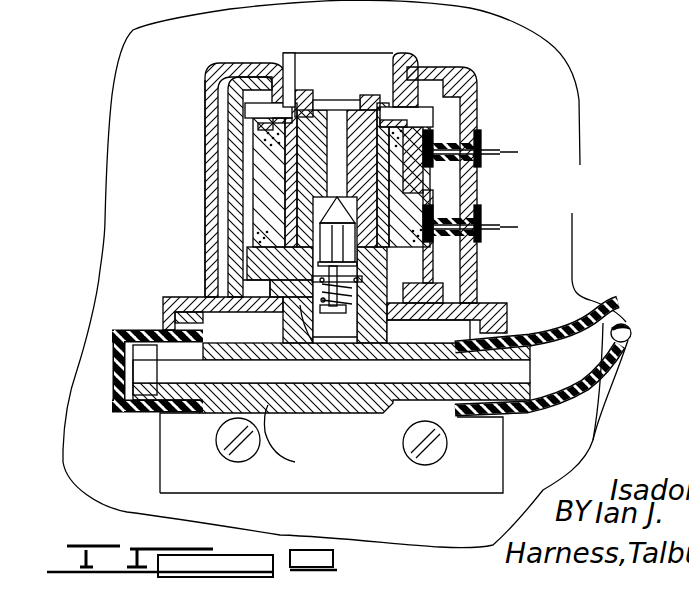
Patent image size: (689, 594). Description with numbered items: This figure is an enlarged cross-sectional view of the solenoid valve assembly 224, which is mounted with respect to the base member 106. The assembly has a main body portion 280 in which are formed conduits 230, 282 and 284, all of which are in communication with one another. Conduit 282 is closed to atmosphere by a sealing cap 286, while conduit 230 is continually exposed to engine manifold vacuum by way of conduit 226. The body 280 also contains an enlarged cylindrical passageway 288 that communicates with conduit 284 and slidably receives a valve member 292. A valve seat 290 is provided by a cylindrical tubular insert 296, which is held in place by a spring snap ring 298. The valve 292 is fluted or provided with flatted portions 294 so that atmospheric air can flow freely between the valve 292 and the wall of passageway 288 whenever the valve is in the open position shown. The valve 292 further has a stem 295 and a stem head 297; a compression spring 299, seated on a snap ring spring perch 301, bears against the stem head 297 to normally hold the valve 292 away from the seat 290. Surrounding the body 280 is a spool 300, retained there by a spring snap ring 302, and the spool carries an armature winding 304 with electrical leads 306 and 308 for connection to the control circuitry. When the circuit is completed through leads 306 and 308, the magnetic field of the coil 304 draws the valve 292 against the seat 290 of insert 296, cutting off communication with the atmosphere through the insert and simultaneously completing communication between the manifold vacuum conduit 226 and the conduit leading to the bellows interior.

The solenoid valve assembly 224 is at (196, 98).
The spool 300 is at (242, 92).
The spring snap ring 302 is at (285, 112).
The spring snap ring 298 is at (343, 120).
The cylindrical tubular insert 296 is at (343, 117).
The electrical lead 306 is at (517, 153).
The armature winding 304 is at (267, 151).
The valve seat 290 is at (330, 176).
The valve member 292 is at (357, 201).
The electrical lead 308 is at (525, 228).
The cylindrical passageway 288 is at (335, 202).
The main body portion 280 is at (280, 322).
The snap ring spring perch 301 is at (313, 280).
The flatted portions 294 is at (357, 253).
The compression spring 299 is at (384, 324).
The stem 295 is at (322, 340).
The stem head 297 is at (337, 365).
The sealing cap 286 is at (130, 412).
The conduit 284 is at (330, 337).
The conduit 282 is at (305, 444).
The conduit 226 is at (573, 405).
The base member 106 is at (593, 430).
The conduit 230 is at (462, 420).